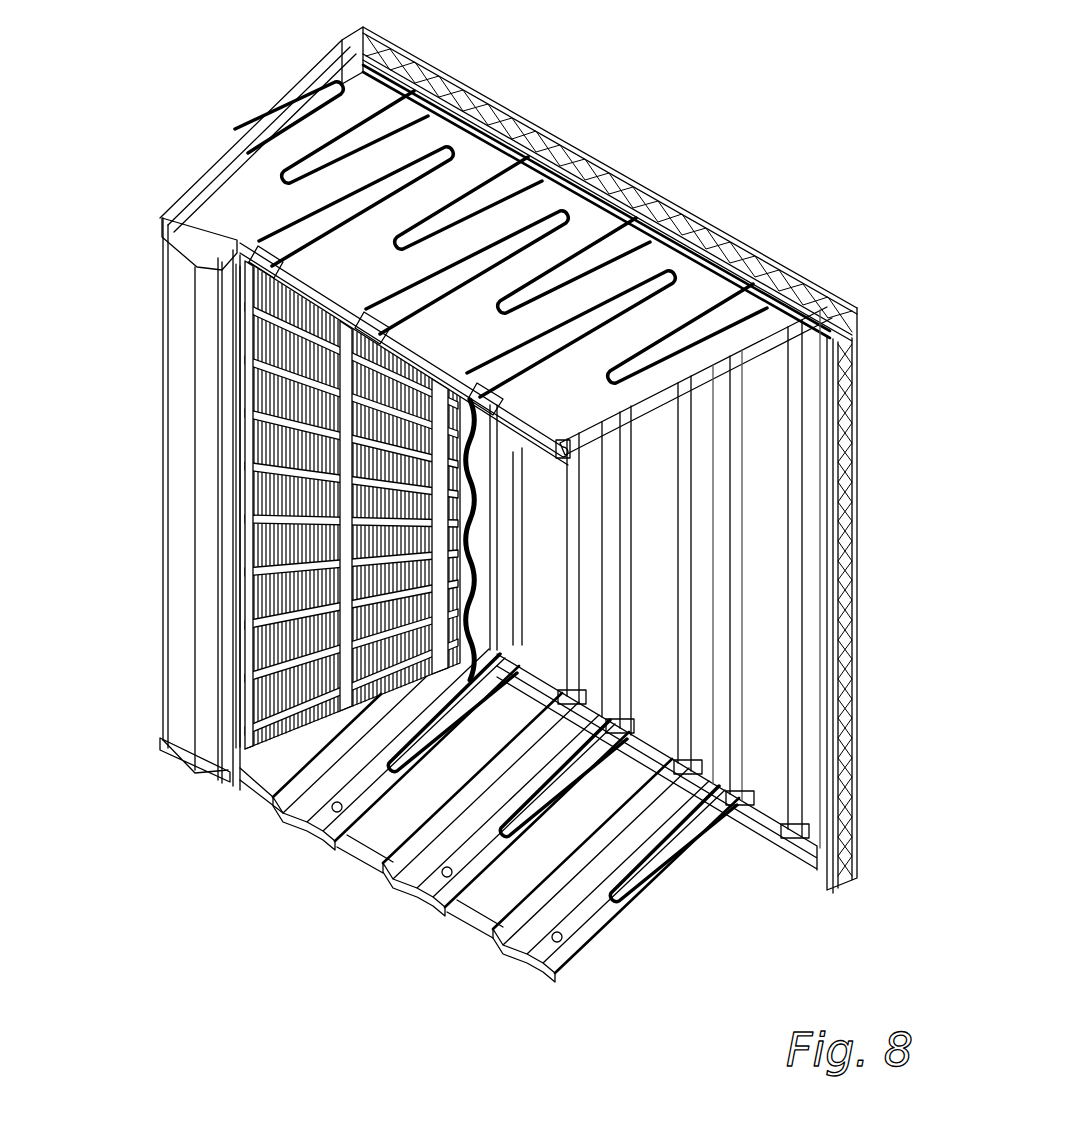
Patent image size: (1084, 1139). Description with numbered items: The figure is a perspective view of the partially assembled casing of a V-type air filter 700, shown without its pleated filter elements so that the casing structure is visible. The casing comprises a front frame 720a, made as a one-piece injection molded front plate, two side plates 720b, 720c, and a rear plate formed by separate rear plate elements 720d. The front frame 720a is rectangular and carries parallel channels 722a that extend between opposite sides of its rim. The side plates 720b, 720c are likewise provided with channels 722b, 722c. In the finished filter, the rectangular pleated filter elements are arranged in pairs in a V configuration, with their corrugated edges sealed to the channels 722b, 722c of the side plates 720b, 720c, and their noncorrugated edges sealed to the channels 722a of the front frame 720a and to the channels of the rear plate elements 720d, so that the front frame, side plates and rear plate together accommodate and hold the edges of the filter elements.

The V-type air filter 700 is at (498, 528).
The front frame 720a is at (544, 246).
The side plate 720b is at (715, 556).
The side plate 720c is at (493, 841).
The rear plate element 720d is at (172, 455).
The channels 722a is at (720, 495).
The channels 722b is at (768, 366).
The channels 722c is at (508, 938).